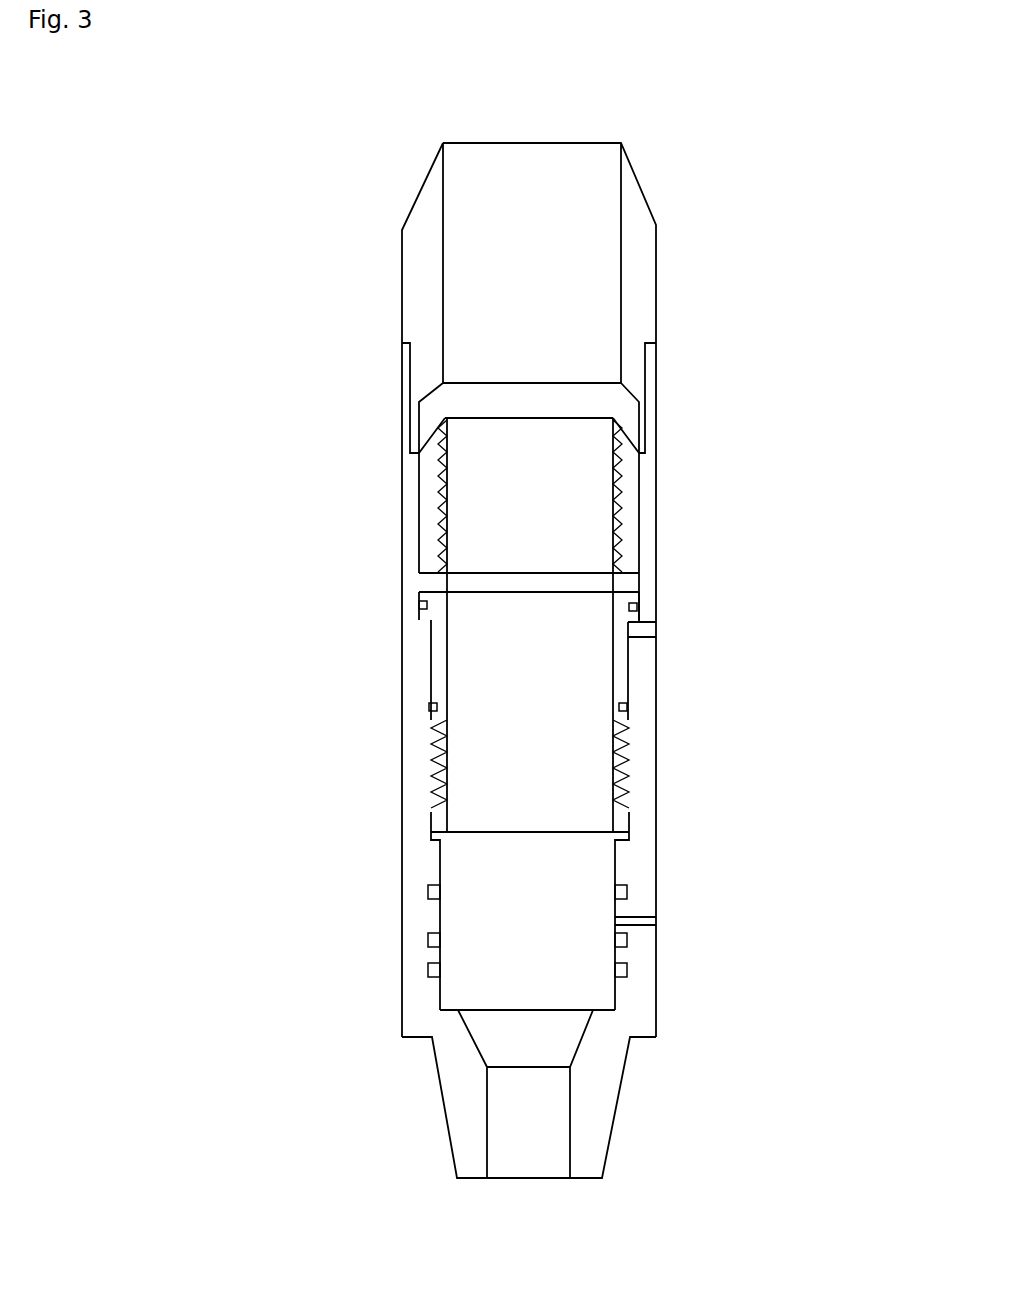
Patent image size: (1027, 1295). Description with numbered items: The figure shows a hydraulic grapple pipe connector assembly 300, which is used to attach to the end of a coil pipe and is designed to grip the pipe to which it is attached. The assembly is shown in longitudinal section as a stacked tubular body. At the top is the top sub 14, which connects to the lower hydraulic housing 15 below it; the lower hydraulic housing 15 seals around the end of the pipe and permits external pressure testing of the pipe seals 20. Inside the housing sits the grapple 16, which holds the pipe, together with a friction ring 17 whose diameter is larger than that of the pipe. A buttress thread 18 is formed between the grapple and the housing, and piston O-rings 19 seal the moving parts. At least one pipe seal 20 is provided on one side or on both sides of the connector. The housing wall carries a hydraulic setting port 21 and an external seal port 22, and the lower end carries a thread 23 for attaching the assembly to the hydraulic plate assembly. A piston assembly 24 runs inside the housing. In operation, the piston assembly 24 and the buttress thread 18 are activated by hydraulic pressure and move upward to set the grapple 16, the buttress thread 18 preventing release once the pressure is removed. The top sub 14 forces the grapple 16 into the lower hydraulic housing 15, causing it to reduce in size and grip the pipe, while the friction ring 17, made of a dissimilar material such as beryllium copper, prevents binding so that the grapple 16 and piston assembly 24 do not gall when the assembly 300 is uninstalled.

The hydraulic grapple pipe connector assembly 300 is at (510, 609).
The top sub 14 is at (668, 268).
The lower hydraulic housing 15 is at (670, 987).
The grapple 16 is at (642, 492).
The friction ring 17 is at (642, 585).
The buttress thread 18 is at (636, 773).
The piston O-rings 19 is at (427, 707).
The pipe seal 20 is at (427, 970).
The hydraulic setting port 21 is at (670, 630).
The external seal port 22 is at (664, 920).
The thread 23 is at (626, 1112).
The piston assembly 24 is at (634, 670).